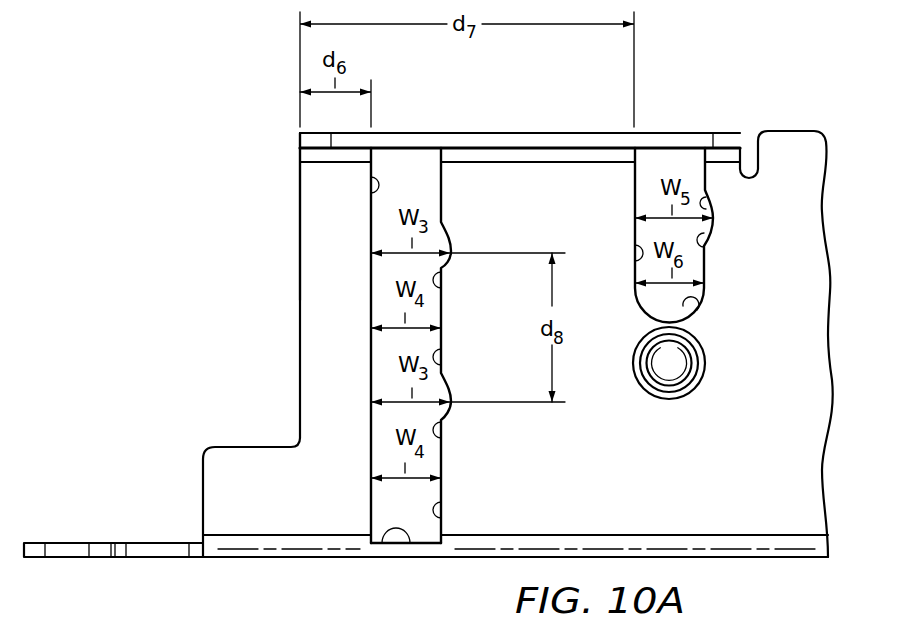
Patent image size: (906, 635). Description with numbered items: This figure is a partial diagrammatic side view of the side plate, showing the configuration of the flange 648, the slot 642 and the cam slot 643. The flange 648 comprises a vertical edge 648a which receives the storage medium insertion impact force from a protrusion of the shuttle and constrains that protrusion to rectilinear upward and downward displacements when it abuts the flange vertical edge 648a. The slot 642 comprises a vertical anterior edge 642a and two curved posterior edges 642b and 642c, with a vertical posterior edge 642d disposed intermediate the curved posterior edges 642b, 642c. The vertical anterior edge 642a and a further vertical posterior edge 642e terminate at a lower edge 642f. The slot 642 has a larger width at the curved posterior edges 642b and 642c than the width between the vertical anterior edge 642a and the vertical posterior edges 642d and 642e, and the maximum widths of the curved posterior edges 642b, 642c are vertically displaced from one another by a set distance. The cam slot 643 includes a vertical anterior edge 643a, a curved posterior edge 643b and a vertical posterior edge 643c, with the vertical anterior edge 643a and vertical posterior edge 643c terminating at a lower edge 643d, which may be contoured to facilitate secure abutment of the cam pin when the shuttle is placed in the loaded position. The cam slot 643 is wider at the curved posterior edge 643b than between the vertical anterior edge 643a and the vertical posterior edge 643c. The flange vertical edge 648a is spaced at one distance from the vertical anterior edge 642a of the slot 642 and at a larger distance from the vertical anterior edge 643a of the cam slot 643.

The slot 642 is at (418, 172).
The vertical anterior edge 642a is at (371, 193).
The curved posterior edge 642b is at (441, 288).
The curved posterior edge 642c is at (441, 438).
The vertical posterior edge 642d is at (441, 365).
The vertical posterior edge 642e is at (441, 518).
The lower edge 642f is at (403, 543).
The cam slot 643 is at (690, 163).
The vertical anterior edge 643a is at (635, 245).
The curved posterior edge 643b is at (706, 209).
The vertical posterior edge 643c is at (704, 247).
The lower edge 643d is at (697, 310).
The flange 648 is at (318, 351).
The vertical edge 648a is at (300, 191).